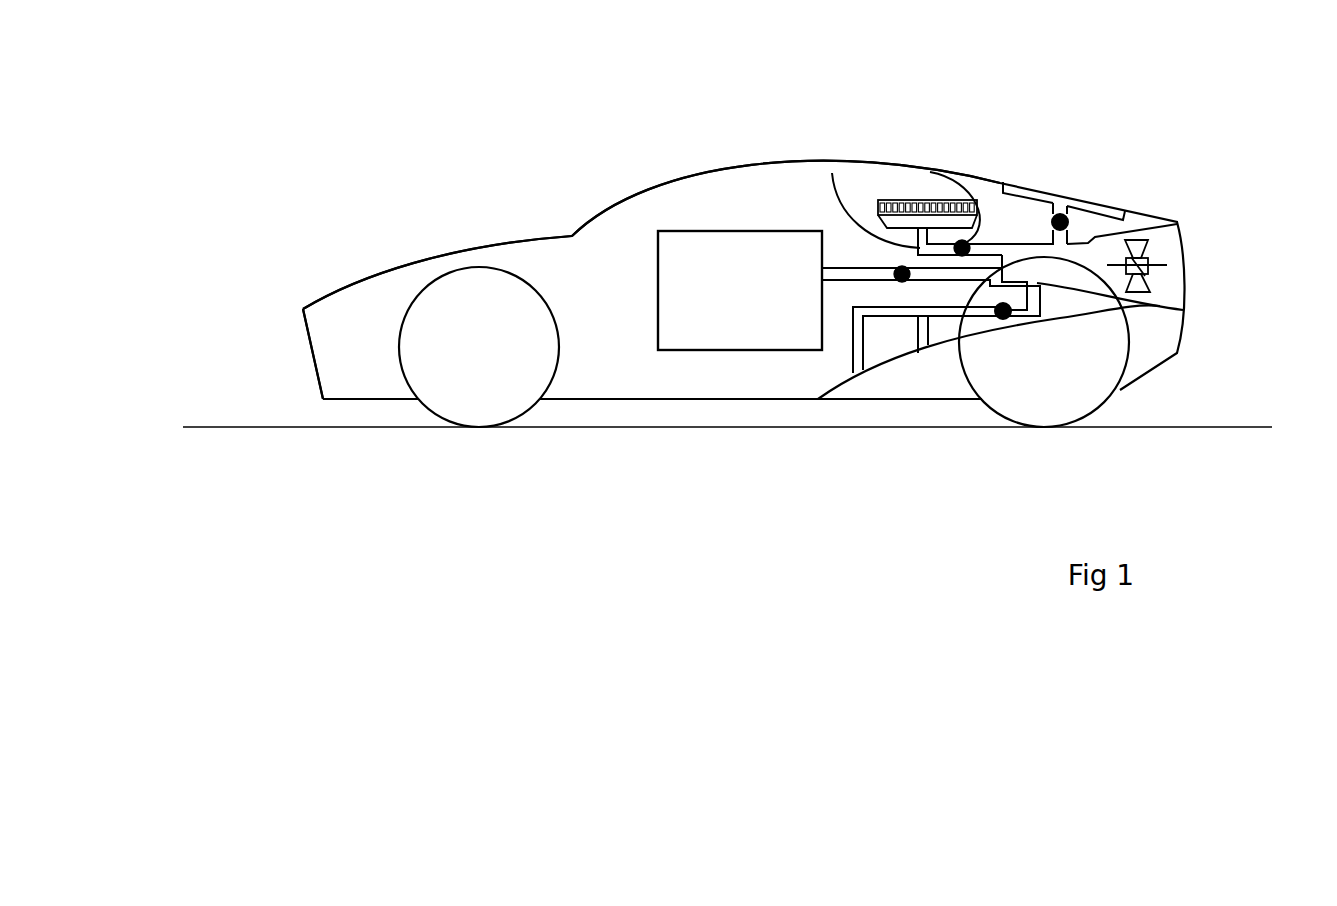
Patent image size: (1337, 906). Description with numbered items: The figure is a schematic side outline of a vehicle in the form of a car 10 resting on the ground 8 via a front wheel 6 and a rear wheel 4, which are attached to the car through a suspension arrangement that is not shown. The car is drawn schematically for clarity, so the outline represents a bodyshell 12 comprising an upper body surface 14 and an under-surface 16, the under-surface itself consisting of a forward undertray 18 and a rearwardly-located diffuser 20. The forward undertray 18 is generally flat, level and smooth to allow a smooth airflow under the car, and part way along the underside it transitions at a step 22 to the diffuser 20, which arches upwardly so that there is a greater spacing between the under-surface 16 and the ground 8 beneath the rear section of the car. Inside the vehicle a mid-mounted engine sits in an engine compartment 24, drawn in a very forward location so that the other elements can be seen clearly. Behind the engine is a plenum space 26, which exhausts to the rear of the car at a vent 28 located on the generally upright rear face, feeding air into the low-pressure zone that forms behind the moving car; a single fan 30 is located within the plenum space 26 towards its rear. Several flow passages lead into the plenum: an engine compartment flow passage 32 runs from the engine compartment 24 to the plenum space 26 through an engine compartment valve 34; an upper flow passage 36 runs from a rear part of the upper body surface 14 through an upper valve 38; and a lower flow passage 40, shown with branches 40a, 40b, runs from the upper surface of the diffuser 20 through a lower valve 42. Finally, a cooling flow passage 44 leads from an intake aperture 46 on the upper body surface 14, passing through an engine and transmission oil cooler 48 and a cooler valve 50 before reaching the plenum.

The car 10 is at (469, 218).
The bodyshell 12 is at (304, 356).
The upper body surface 14 is at (725, 166).
The under-surface 16 is at (777, 410).
The forward undertray 18 is at (598, 400).
The front wheel 6 is at (440, 416).
The rear wheel 4 is at (1102, 410).
The ground 8 is at (1200, 427).
The step 22 is at (817, 400).
The engine compartment 24 is at (680, 229).
The plenum space 26 is at (1002, 254).
The vent 28 is at (1187, 272).
The fan 30 is at (1148, 250).
The engine compartment flow passage 32 is at (829, 262).
The engine compartment valve 34 is at (915, 352).
The upper flow passage 36 is at (1078, 238).
The upper valve 38 is at (1059, 213).
The lower flow passage 40 is at (945, 320).
The first channel branch 40a is at (866, 370).
The second channel branch 40b is at (926, 345).
The lower valve 42 is at (1009, 322).
The cooling flow passage 44 is at (832, 175).
The intake aperture 46 is at (868, 170).
The engine and transmission oil cooler 48 is at (903, 199).
The cooler valve 50 is at (968, 246).
The diffuser 20 is at (901, 282).